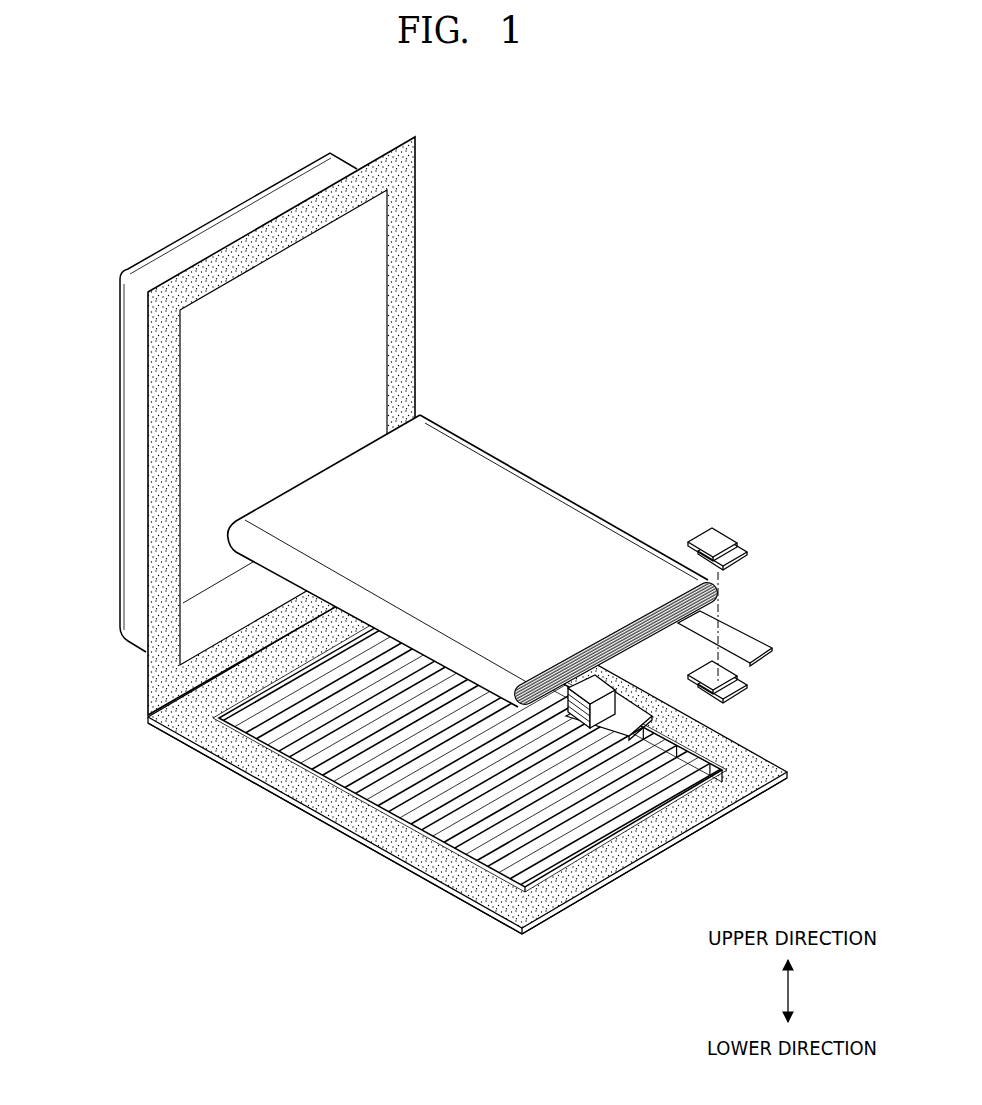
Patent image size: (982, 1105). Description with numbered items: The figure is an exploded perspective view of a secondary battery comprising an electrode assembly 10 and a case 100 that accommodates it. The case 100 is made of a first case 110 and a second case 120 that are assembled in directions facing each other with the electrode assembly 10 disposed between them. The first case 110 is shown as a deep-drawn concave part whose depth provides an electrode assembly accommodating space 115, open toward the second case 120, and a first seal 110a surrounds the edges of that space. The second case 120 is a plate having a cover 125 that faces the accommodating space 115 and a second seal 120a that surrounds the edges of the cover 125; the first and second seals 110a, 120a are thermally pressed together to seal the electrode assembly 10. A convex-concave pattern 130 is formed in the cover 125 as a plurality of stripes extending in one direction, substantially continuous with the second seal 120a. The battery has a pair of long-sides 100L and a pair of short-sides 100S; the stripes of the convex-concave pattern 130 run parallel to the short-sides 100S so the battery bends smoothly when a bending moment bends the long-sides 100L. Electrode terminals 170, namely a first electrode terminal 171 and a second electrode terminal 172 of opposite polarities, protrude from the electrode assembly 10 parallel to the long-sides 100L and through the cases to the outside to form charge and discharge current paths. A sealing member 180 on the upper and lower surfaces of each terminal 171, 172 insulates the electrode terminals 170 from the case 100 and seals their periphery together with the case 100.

The electrode assembly 10 is at (540, 492).
The case 100 is at (416, 544).
The long-sides 100L is at (278, 793).
The short-sides 100S is at (653, 852).
The first case 110 is at (290, 478).
The first seal 110a is at (415, 277).
The electrode assembly accommodating space 115 is at (188, 245).
The second case 120 is at (467, 756).
The second seal 120a is at (352, 818).
The cover 125 is at (415, 830).
The convex-concave pattern 130 is at (488, 863).
The electrode terminals 170 is at (714, 686).
The first electrode terminal 171 is at (637, 722).
The second electrode terminal 172 is at (770, 657).
The sealing member 180 is at (606, 676).